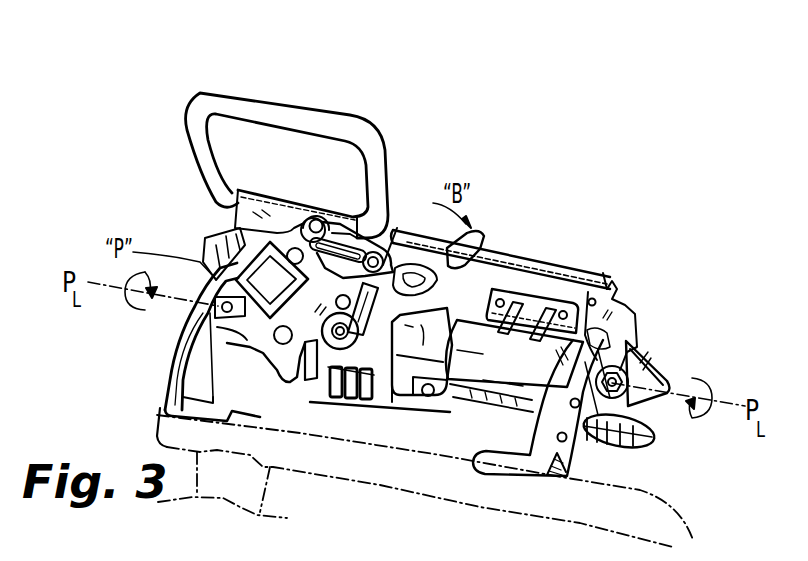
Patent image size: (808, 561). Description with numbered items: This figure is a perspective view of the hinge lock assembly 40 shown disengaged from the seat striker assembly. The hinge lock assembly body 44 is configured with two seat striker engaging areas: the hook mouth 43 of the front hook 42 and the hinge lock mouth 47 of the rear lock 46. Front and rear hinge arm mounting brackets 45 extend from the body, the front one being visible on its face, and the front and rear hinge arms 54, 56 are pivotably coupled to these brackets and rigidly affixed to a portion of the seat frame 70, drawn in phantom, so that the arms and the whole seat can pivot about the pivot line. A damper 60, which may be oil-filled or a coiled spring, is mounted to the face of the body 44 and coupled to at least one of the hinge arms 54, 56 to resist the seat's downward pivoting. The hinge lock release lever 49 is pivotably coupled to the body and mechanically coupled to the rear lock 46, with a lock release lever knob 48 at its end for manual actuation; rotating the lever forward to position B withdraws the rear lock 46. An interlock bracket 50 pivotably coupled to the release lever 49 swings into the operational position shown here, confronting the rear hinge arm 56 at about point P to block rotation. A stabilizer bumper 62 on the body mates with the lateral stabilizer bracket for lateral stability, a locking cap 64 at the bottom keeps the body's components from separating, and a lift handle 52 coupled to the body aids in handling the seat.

The hinge lock assembly 40 is at (504, 164).
The front hook 42 is at (660, 363).
The hook mouth 43 is at (648, 409).
The hinge lock assembly body 44 is at (590, 267).
The hinge arm mounting bracket 45 is at (640, 320).
The rear lock 46 is at (313, 373).
The hinge lock mouth 47 is at (301, 388).
The lock release lever knob 48 is at (490, 240).
The hinge lock release lever 49 is at (412, 258).
The interlock bracket 50 is at (218, 231).
The lift handle 52 is at (183, 106).
The front hinge arm 54 is at (567, 470).
The rear hinge arm 56 is at (173, 345).
The damper 60 is at (523, 338).
The stabilizer bumper 62 is at (397, 397).
The locking cap 64 is at (350, 397).
The seat frame 70 is at (157, 420).